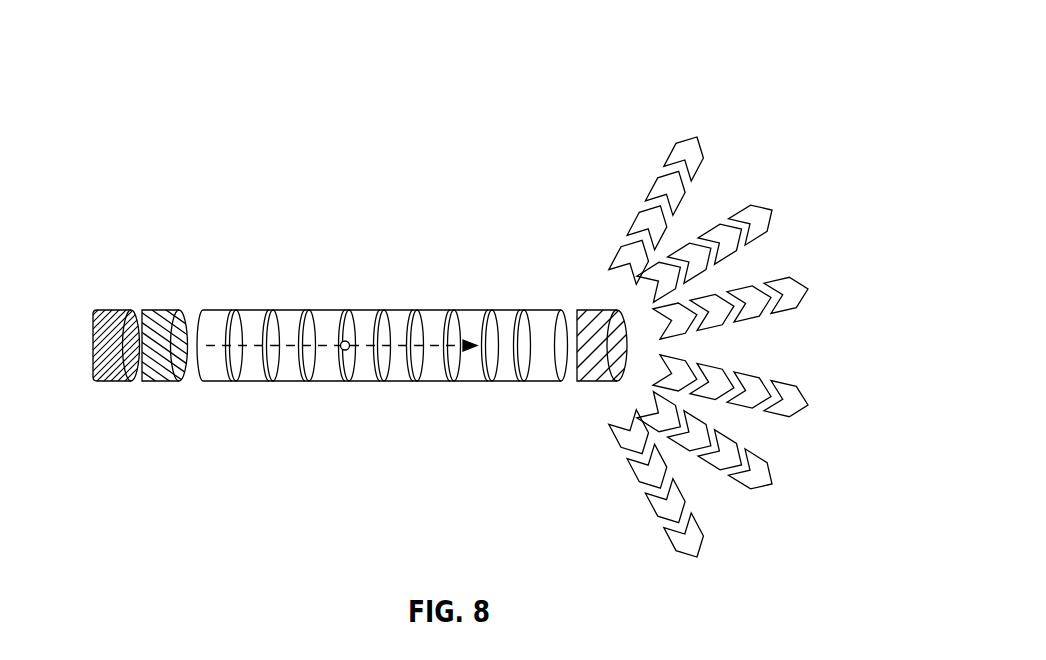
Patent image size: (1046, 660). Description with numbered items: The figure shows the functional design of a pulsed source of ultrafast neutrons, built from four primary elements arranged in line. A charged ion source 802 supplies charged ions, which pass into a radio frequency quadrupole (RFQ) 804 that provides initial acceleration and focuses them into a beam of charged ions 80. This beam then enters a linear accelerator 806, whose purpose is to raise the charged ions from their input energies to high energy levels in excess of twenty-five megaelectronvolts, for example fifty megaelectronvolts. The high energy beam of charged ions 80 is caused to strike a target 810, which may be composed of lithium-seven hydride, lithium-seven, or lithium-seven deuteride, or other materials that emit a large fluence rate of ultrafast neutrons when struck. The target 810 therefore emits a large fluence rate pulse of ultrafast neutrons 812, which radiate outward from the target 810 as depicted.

The charged ion source 802 is at (90, 342).
The radio frequency quadrupole (RFQ) 804 is at (152, 308).
The linear accelerator 806 is at (357, 381).
The beam of charged ions 80 is at (350, 339).
The target 810 is at (582, 381).
The pulse of ultrafast neutrons 812 is at (808, 290).